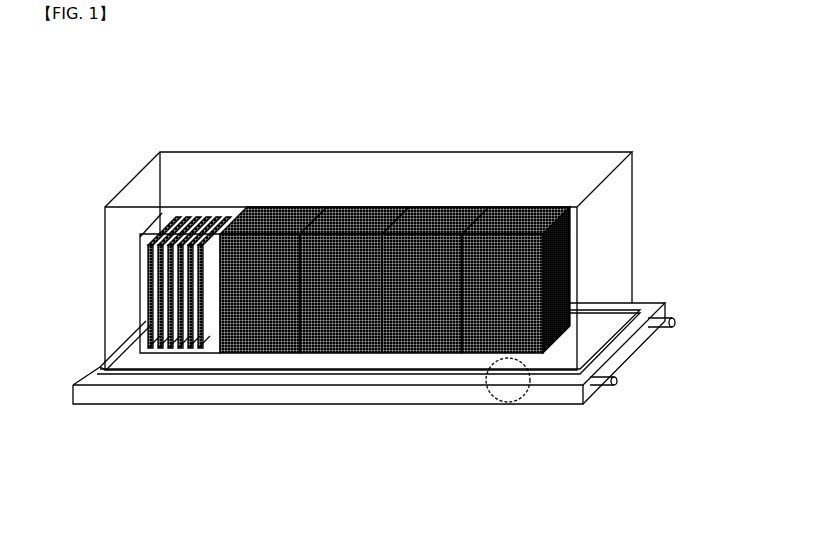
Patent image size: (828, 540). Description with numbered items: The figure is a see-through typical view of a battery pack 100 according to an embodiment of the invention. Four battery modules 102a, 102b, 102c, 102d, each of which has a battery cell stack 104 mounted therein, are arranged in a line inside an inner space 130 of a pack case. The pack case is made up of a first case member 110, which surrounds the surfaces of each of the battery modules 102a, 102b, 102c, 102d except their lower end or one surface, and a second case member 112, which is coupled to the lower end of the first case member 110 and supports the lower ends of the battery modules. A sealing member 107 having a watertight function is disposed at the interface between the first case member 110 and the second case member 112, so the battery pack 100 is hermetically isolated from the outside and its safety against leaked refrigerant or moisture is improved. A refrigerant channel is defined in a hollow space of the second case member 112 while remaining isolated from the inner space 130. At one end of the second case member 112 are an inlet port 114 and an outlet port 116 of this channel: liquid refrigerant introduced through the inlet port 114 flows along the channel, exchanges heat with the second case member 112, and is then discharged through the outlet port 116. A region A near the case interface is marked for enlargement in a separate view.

The battery pack 100 is at (141, 107).
The battery module 102a is at (293, 217).
The battery module 102b is at (370, 217).
The battery module 102c is at (433, 215).
The battery module 102d is at (498, 215).
The battery cell stack 104 is at (205, 230).
The sealing member 107 is at (100, 366).
The first case member 110 is at (628, 152).
The second case member 112 is at (92, 405).
The inlet port 114 is at (618, 383).
The outlet port 116 is at (676, 323).
The inner space 130 is at (596, 248).
The region A is at (517, 400).